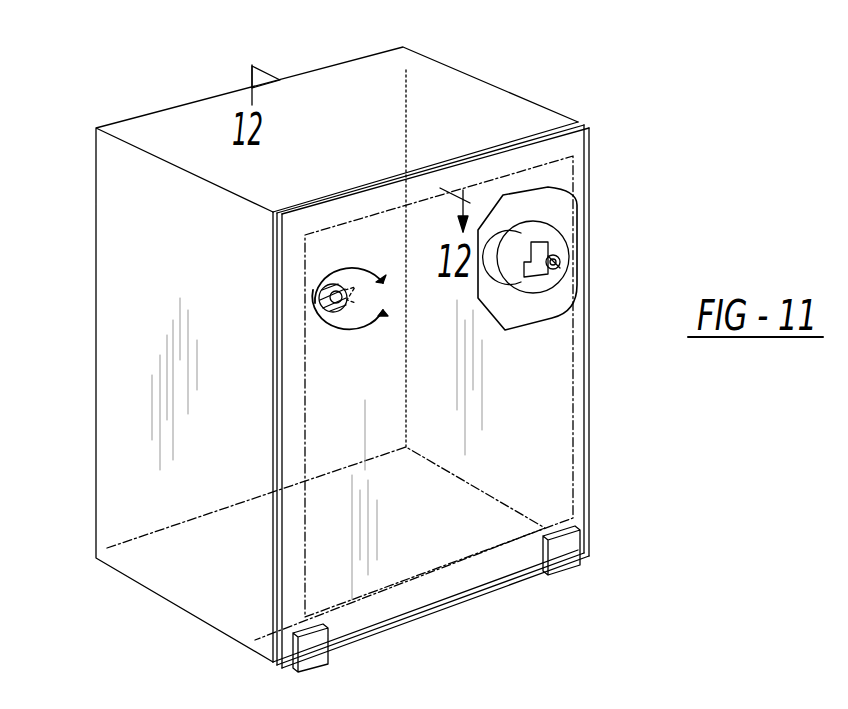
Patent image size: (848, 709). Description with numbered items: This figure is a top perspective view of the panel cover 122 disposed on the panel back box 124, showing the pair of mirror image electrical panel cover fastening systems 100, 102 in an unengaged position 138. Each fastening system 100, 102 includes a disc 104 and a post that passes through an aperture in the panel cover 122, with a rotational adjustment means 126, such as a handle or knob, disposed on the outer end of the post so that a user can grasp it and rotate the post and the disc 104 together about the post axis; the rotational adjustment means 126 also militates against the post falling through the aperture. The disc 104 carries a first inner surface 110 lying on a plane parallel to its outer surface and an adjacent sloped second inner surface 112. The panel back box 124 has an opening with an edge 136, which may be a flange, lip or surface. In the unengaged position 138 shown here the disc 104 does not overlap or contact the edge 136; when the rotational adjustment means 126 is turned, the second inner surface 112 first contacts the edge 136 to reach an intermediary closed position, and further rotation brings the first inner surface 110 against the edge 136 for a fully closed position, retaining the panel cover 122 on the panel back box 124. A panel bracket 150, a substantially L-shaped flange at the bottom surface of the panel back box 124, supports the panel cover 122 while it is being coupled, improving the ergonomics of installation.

The electrical panel cover fastening system 100 is at (580, 223).
The electrical panel cover fastening system 102 is at (313, 268).
The disc 104 is at (513, 228).
The first inner surface 110 is at (548, 290).
The second inner surface 112 is at (521, 243).
The panel cover 122 is at (595, 488).
The panel back box 124 is at (175, 603).
The rotational adjustment means 126 is at (560, 266).
The edge 136 is at (302, 383).
The unengaged position 138 is at (684, 242).
The panel bracket 150 is at (318, 670).